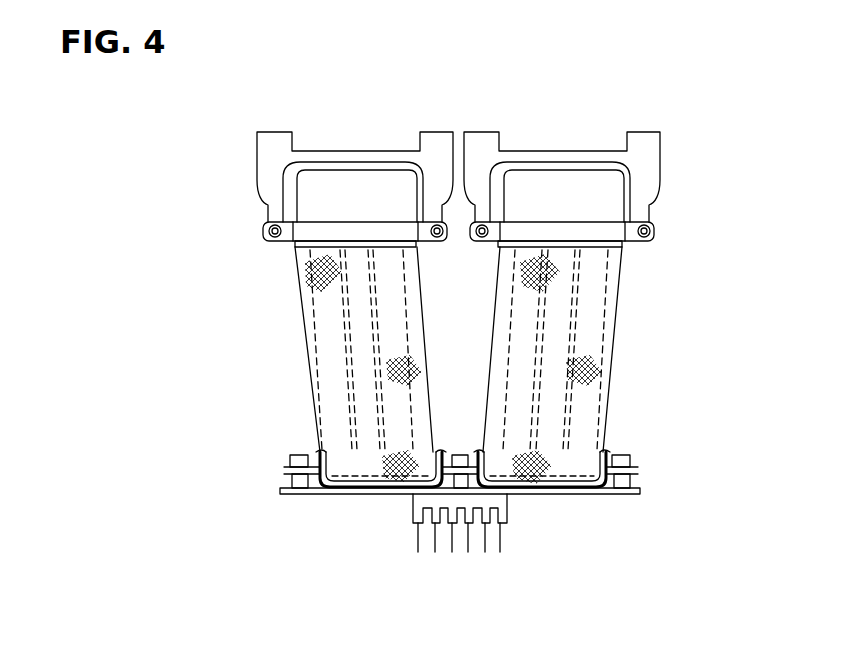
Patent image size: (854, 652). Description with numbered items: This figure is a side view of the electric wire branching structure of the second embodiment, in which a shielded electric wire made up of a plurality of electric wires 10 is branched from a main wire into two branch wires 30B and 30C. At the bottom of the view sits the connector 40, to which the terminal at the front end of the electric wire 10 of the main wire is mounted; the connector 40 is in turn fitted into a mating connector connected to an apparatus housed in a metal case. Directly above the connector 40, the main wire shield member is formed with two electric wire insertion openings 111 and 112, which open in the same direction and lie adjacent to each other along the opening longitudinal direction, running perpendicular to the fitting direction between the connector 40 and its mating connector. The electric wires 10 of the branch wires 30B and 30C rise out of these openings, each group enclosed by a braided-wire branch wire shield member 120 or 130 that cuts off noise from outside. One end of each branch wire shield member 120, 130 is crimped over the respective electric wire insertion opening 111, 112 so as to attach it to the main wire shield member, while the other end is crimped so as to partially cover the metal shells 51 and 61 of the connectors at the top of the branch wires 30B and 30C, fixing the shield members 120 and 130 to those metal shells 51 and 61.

The electric wire 10 is at (325, 320).
The branch wire 30B is at (296, 346).
The branch wire 30C is at (622, 331).
The connector 40 is at (400, 541).
The metal shell 51 is at (338, 175).
The metal shell 61 is at (573, 175).
The electric wire insertion opening 111 is at (318, 453).
The electric wire insertion opening 112 is at (605, 450).
The branch wire shield member 120 is at (313, 372).
The branch wire shield member 130 is at (612, 325).